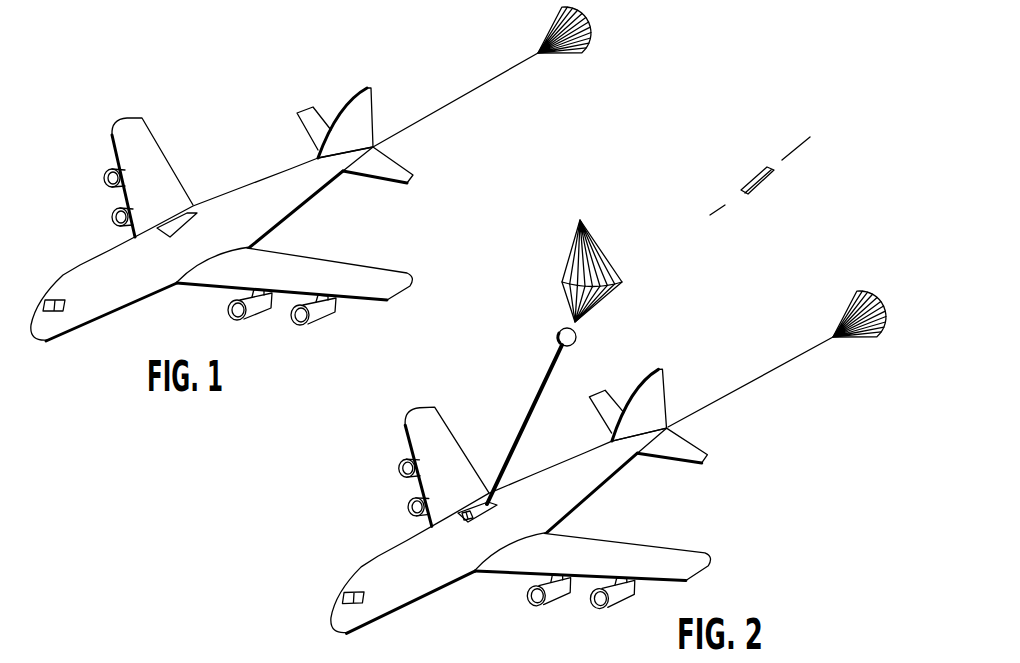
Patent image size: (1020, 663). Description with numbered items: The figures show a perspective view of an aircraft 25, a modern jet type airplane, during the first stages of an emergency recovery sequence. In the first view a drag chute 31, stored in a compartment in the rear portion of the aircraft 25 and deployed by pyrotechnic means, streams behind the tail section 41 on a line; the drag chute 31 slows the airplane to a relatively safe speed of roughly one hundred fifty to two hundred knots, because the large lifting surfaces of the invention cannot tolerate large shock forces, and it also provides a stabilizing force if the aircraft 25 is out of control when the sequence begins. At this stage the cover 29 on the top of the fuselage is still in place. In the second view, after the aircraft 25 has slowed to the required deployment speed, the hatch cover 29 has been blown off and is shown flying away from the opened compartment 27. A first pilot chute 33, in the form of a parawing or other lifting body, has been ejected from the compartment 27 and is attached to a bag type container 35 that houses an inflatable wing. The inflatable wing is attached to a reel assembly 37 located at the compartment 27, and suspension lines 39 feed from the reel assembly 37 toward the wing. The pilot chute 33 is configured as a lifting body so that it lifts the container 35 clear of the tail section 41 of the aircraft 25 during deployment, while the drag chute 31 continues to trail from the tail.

In FIG. 1, the aircraft 25 is at (132, 292).
In FIG. 2, the aircraft 25 is at (433, 582).
In FIG. 2, the compartment 27 is at (498, 505).
In FIG. 1, the cover 29 is at (192, 211).
In FIG. 2, the cover 29 is at (766, 175).
In FIG. 1, the drag chute 31 is at (592, 27).
In FIG. 2, the drag chute 31 is at (873, 292).
In FIG. 2, the first pilot chute 33 is at (606, 263).
In FIG. 2, the bag type container 35 is at (578, 334).
In FIG. 2, the reel assembly 37 is at (477, 517).
In FIG. 2, the suspension lines 39 is at (532, 400).
In FIG. 1, the tail section 41 is at (367, 107).
In FIG. 2, the tail section 41 is at (659, 393).